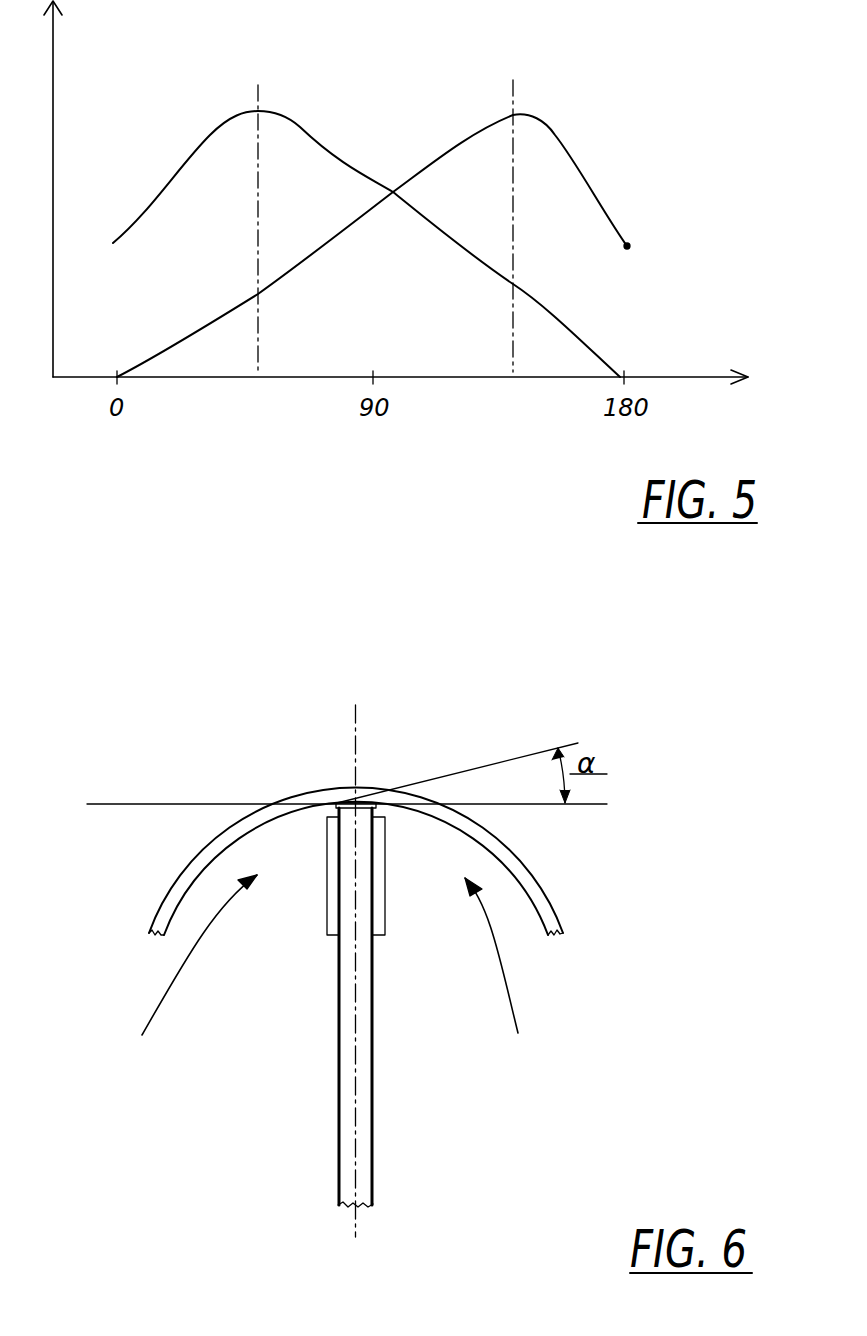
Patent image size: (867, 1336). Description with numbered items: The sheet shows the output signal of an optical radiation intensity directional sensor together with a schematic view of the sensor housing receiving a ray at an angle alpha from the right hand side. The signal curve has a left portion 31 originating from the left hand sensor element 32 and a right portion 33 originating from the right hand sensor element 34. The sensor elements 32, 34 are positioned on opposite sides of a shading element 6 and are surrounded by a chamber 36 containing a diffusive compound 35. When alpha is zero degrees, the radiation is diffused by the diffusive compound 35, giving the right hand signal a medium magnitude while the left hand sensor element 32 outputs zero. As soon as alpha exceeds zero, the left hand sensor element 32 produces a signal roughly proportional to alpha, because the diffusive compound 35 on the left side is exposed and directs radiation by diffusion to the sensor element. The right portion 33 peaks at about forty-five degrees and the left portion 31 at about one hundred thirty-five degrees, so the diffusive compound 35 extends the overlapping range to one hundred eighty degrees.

In FIG. 5, the left portion 31 is at (210, 137).
In FIG. 5, the right portion 33 is at (550, 133).
In FIG. 6, the shading element 6 is at (345, 975).
In FIG. 6, the left hand sensor element 32 is at (327, 895).
In FIG. 6, the right hand sensor element 34 is at (385, 895).
In FIG. 6, the diffusive compound 35 is at (501, 974).
In FIG. 6, the chamber 36 is at (187, 972).